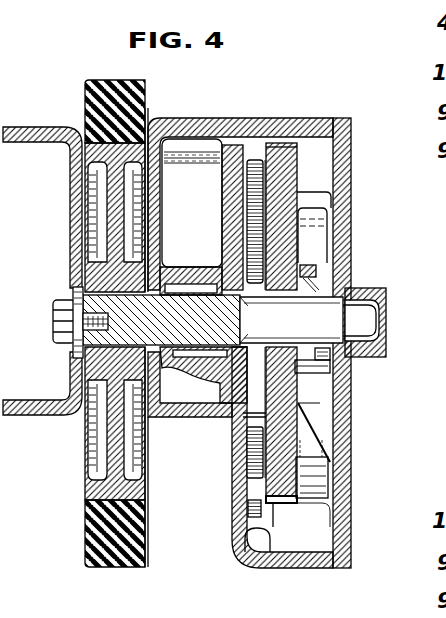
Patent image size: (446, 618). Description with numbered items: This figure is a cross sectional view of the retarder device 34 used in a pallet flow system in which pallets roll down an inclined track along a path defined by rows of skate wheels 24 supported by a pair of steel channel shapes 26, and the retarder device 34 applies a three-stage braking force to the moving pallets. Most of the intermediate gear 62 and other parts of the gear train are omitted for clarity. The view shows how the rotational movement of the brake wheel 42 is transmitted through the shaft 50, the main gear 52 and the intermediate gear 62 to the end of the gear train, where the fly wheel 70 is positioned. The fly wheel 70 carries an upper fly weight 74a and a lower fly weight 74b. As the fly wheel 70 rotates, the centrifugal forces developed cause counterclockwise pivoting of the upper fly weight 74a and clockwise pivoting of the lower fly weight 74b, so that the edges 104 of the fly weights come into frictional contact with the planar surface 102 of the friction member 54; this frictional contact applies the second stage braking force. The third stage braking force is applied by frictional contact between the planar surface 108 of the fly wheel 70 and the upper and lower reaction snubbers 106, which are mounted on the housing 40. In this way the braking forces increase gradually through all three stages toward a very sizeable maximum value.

The skate wheels 24 is at (69, 209).
The steel channel shapes 26 is at (160, 227).
The retarder device 34 is at (289, 117).
The housing 40 is at (300, 569).
The brake wheel 42 is at (146, 116).
The shaft 50 is at (364, 318).
The main gear 52 is at (300, 389).
The friction member 54 is at (351, 143).
The intermediate gear 62 is at (255, 160).
The fly wheel 70 is at (253, 557).
The upper fly weight 74a is at (355, 202).
The lower fly weight 74b is at (316, 477).
The planar surface of friction member 102 is at (327, 416).
The edges of fly weights 104 is at (330, 250).
The reaction snubbers 106 is at (262, 242).
The planar surface of fly wheel 108 is at (262, 208).